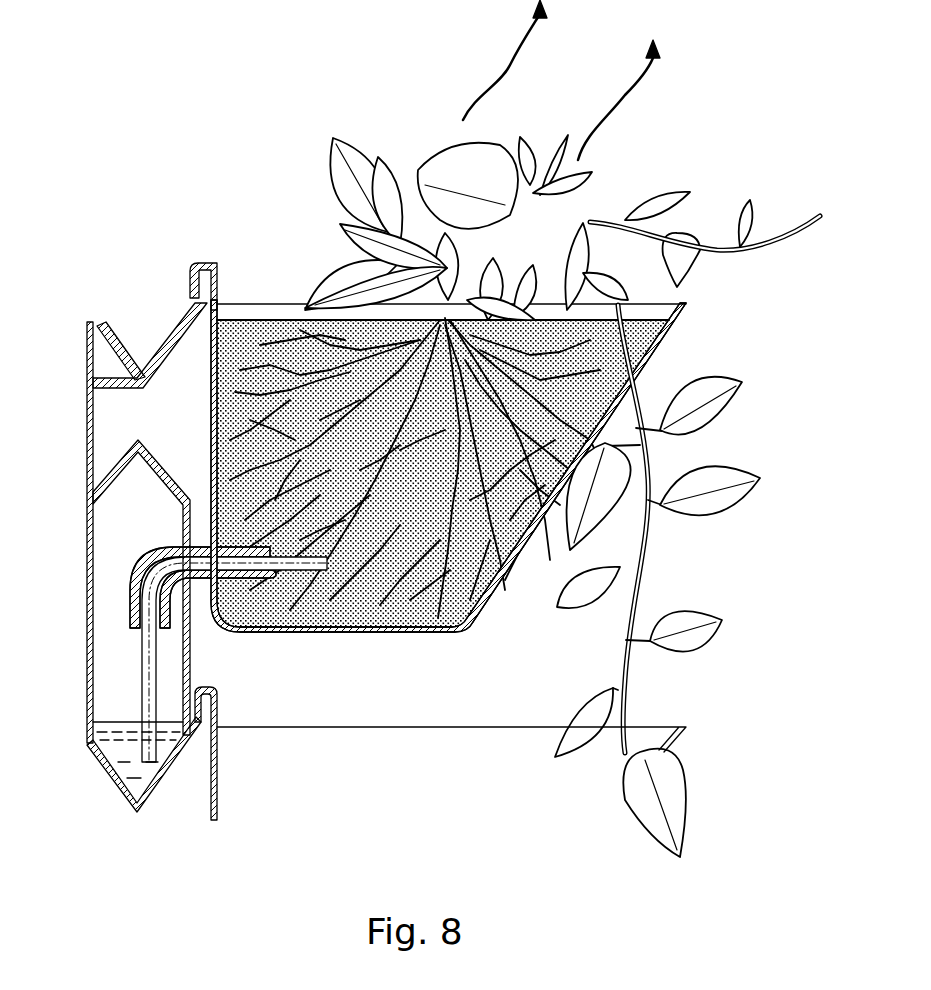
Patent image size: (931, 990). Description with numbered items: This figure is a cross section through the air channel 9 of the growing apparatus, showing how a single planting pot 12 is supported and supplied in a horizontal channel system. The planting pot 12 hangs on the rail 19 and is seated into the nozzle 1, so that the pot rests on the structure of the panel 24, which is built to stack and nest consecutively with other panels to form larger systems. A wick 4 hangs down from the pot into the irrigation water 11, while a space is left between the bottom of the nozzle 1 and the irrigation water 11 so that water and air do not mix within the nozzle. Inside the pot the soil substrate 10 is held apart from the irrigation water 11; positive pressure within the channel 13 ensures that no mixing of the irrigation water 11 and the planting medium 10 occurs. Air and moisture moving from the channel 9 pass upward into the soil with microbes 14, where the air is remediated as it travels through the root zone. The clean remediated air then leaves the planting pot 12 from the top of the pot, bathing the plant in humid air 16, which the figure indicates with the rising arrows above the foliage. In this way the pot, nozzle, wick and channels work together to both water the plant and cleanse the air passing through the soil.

The nozzle 1 is at (130, 597).
The wick 4 is at (147, 667).
The air channel 9 is at (133, 445).
The soil substrate 10 is at (365, 498).
The irrigation water 11 is at (118, 753).
The planting pot 12 is at (303, 634).
The channel 13 is at (133, 482).
The soil with microbes 14 is at (468, 620).
The humid air 16 is at (562, 428).
The rail 19 is at (190, 283).
The panel 24 is at (166, 340).